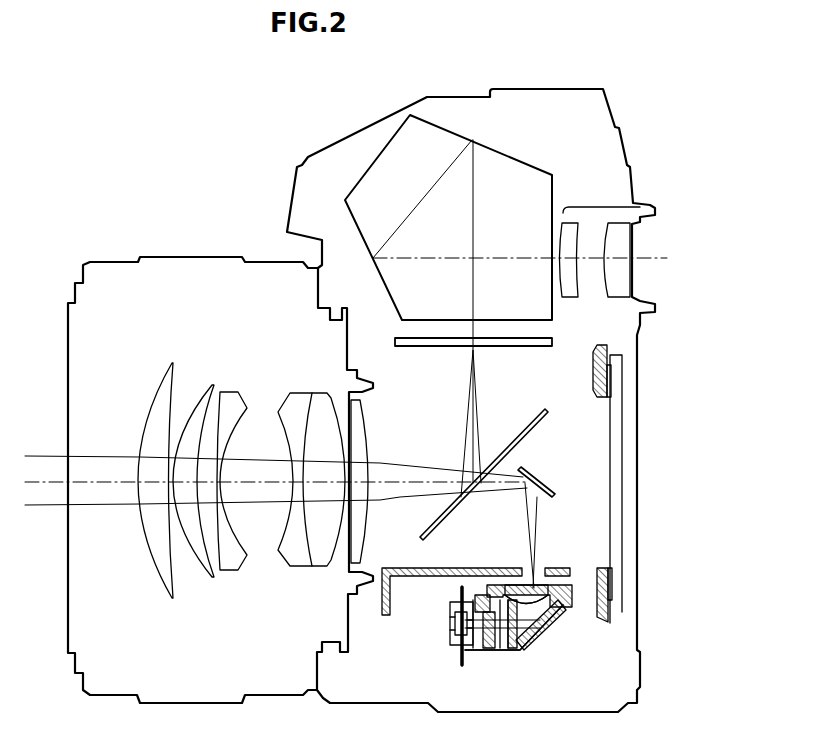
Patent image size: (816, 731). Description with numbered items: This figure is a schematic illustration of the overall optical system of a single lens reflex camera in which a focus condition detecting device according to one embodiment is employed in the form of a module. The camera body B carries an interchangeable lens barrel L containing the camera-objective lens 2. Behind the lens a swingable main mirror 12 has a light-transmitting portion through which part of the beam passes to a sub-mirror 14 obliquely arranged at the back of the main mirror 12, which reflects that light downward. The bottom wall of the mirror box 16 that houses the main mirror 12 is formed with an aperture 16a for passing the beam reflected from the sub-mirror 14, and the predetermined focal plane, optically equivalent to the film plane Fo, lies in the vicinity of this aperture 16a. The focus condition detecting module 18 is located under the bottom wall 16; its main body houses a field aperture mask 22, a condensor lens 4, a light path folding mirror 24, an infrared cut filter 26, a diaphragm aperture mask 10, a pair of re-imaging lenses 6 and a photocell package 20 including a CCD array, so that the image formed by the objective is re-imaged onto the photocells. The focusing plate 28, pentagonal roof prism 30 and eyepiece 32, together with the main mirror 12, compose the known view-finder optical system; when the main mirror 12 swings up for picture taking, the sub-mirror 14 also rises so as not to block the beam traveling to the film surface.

The camera body B is at (548, 97).
The interchangeable lens barrel L is at (193, 257).
The camera-objective lens 2 is at (255, 586).
The pentagonal roof prism 30 is at (520, 157).
The focusing plate 28 is at (422, 348).
The eyepiece 32 is at (591, 206).
The main mirror 12 is at (528, 418).
The sub-mirror 14 is at (533, 472).
The film plane Fo is at (612, 423).
The bottom wall of the mirror box 16 is at (400, 580).
The aperture 16a is at (538, 572).
The diaphragm aperture mask 10 is at (491, 612).
The field aperture mask 22 is at (518, 587).
The condensor lens 4 is at (550, 612).
The light path folding mirror 24 is at (548, 617).
The photocell package 20 is at (445, 645).
The re-imaging lens 6 is at (480, 640).
The infrared cut filter 26 is at (510, 642).
The focus condition detecting module 18 is at (523, 662).